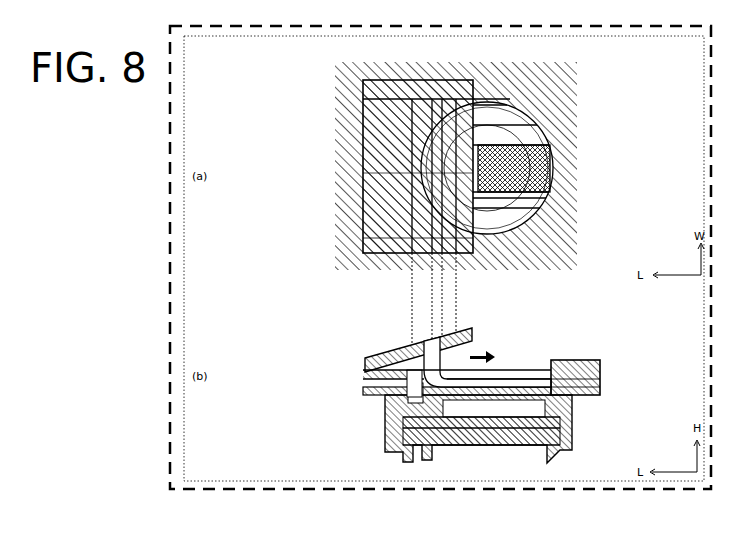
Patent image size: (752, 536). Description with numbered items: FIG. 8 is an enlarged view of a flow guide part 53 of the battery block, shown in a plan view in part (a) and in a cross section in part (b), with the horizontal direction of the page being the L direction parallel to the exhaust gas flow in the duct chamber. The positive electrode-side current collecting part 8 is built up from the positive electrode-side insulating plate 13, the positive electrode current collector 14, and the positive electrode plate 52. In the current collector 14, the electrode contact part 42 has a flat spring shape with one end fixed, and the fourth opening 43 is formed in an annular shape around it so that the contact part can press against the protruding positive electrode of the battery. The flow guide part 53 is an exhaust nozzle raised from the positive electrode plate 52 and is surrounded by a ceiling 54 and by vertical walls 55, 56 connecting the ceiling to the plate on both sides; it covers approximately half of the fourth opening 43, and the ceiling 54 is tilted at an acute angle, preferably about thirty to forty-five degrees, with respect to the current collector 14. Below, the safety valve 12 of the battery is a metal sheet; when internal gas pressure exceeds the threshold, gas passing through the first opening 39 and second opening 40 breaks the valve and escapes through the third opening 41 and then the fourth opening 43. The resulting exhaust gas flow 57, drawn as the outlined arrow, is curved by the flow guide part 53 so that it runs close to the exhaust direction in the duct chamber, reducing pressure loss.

The positive electrode-side current collecting part 8 is at (660, 352).
The safety valve 12 is at (575, 414).
The positive electrode-side insulating plate 13 is at (603, 392).
The positive electrode current collector 14 is at (603, 381).
The first opening 39 is at (483, 449).
The second opening 40 is at (450, 449).
The third opening 41 is at (437, 86).
The electrode contact part 42 is at (505, 130).
The fourth opening 43 is at (503, 105).
The positive electrode plate 52 is at (550, 212).
The flow guide part 53 is at (283, 143).
The ceiling 54 is at (345, 173).
The vertical wall 55 is at (345, 224).
The vertical wall 56 is at (363, 85).
The exhaust gas flow 57 is at (498, 353).